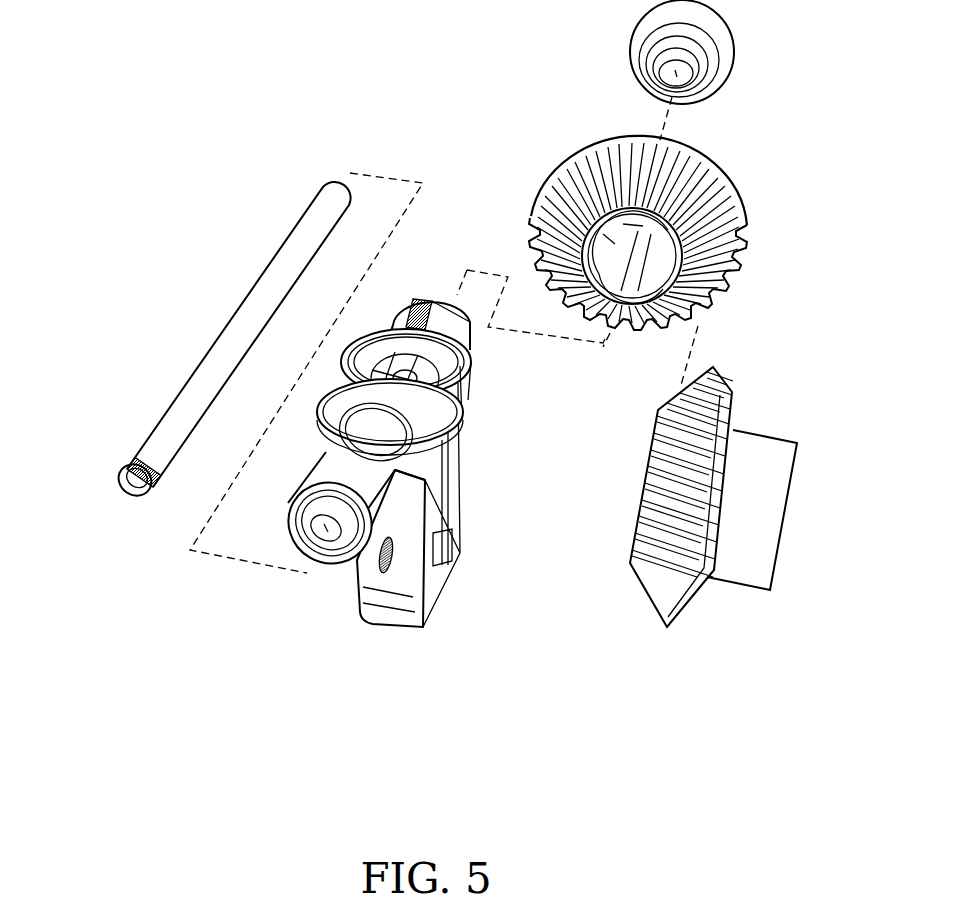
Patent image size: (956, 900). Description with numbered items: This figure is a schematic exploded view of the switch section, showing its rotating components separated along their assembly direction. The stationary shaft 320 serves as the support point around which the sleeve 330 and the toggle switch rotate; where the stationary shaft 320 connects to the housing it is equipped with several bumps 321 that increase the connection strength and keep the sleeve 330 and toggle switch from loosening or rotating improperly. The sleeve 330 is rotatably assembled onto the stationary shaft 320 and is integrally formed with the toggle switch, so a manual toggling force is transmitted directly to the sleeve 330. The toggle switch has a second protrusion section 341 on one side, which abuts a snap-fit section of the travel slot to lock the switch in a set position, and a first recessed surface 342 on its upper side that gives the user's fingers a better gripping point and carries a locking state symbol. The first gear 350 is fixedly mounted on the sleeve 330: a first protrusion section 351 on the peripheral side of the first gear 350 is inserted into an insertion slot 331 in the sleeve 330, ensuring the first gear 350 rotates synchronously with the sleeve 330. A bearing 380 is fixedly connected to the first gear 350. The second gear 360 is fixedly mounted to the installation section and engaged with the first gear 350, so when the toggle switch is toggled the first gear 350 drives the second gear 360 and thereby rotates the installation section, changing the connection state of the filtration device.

The stationary shaft 320 is at (282, 277).
The bumps 321 is at (137, 450).
The sleeve 330 is at (318, 527).
The insertion slot 331 is at (428, 297).
The second protrusion section 341 is at (403, 627).
The first recessed surface 342 is at (348, 588).
The first gear 350 is at (730, 203).
The first protrusion section 351 is at (655, 283).
The second gear 360 is at (677, 627).
The bearing 380 is at (647, 72).